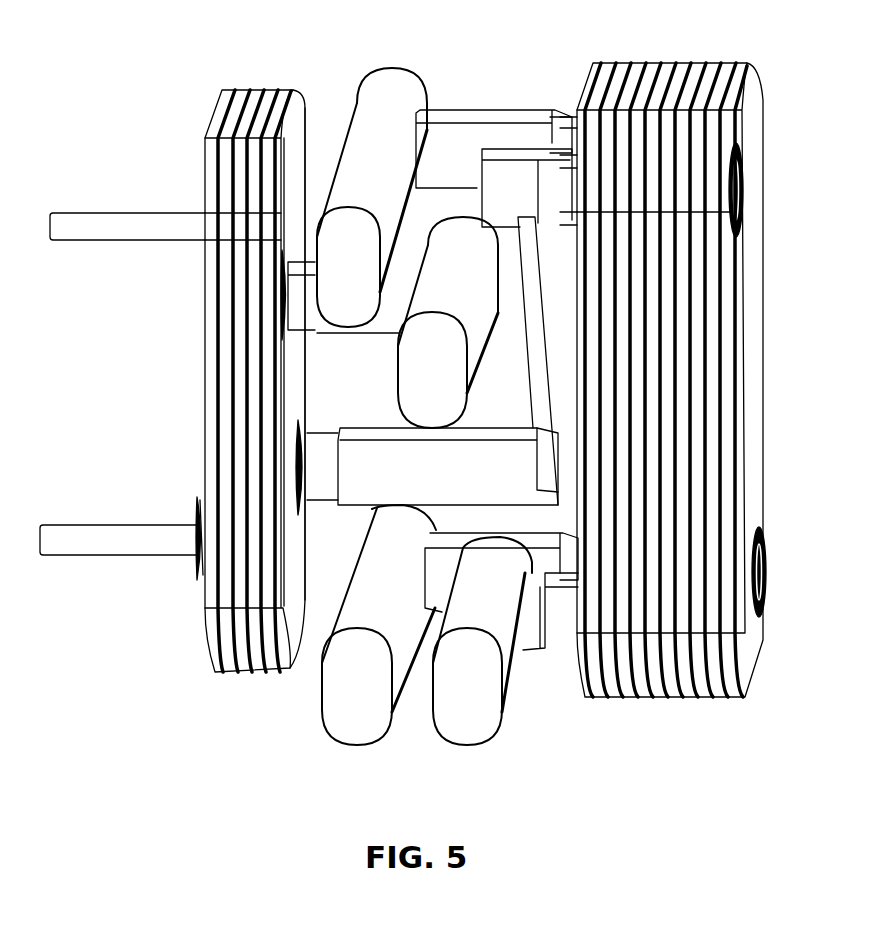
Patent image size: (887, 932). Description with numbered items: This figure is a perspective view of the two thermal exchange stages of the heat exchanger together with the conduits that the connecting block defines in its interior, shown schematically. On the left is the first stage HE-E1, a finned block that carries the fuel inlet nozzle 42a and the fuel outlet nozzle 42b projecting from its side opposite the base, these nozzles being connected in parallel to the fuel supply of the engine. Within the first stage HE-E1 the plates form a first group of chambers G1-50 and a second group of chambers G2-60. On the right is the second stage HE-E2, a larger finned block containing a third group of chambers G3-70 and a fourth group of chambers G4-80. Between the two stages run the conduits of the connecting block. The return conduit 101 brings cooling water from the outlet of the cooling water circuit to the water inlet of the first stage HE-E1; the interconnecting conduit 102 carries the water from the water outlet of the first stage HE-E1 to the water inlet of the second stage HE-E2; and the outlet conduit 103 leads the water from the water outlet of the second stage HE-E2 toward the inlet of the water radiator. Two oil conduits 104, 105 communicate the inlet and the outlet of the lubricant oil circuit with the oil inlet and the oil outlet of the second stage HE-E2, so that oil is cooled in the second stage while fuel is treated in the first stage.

The fuel inlet nozzle 42a is at (137, 207).
The fuel outlet nozzle 42b is at (107, 553).
The second group of chambers G2-60 is at (243, 393).
The first group of chambers G1-50 is at (258, 482).
The fourth group of chambers G4-80 is at (667, 325).
The third group of chambers G3-70 is at (685, 448).
The return conduit 101 is at (484, 323).
The interconnecting conduit 102 is at (413, 447).
The outlet conduit 103 is at (395, 680).
The oil conduit 104 is at (400, 212).
The oil conduit 105 is at (508, 665).
The first stage of thermal exchange HE-E1 is at (171, 445).
The second stage of thermal exchange HE-E2 is at (711, 467).